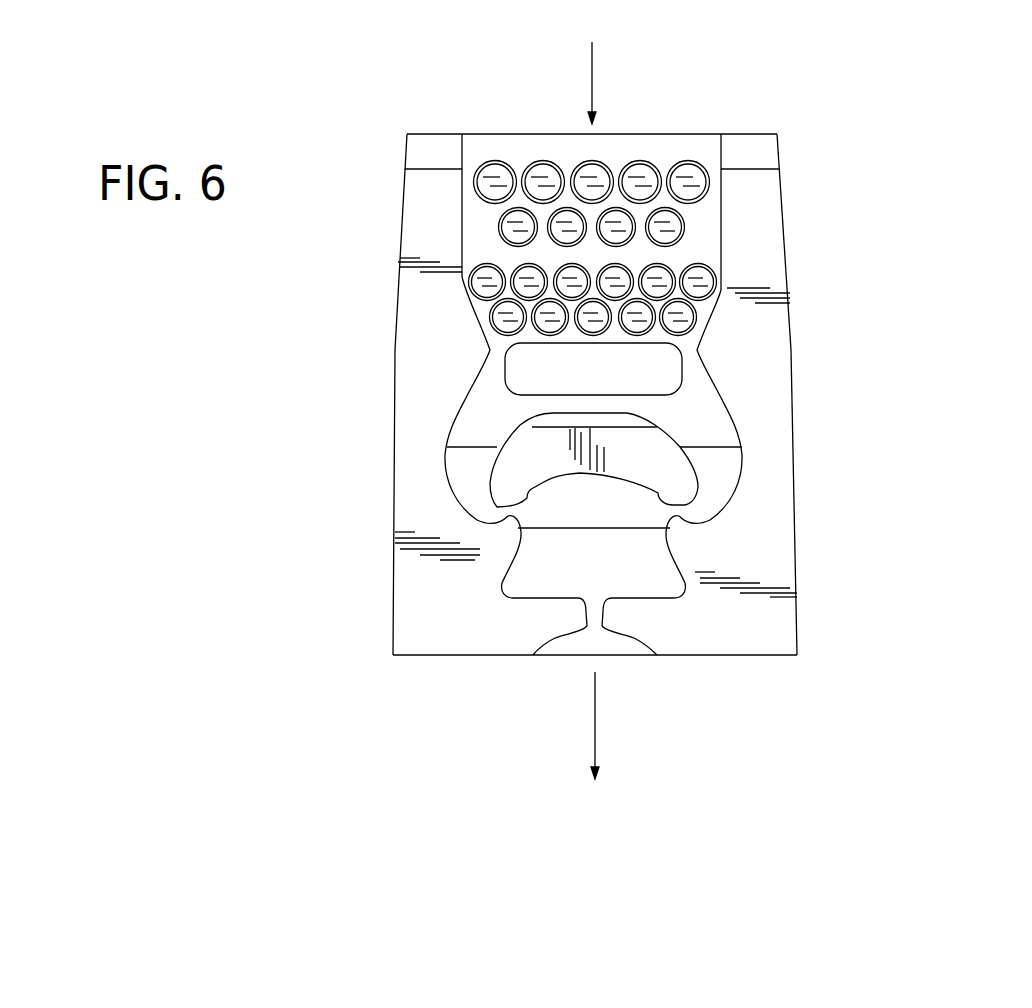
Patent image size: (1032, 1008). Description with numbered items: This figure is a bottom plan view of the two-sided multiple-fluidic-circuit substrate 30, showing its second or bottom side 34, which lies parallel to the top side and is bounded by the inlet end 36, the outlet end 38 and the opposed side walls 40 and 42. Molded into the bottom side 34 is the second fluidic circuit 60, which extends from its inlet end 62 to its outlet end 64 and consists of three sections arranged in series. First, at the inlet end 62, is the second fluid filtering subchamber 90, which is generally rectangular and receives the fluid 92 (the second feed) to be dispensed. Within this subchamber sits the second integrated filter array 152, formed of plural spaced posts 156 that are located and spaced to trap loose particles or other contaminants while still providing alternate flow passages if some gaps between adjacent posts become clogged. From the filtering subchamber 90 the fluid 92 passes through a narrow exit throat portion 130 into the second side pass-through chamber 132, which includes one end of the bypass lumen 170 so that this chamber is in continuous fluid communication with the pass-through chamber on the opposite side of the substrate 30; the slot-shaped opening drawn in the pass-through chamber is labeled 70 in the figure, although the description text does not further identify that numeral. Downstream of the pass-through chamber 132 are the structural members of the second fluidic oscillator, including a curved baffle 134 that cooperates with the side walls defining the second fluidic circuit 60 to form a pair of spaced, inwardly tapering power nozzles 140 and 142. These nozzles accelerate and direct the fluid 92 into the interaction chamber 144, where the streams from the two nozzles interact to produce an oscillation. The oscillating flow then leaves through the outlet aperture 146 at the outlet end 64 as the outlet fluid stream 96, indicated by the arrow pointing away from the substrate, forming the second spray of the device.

The substrate 30 is at (577, 396).
The second or bottom side 34 is at (778, 282).
The inlet end 36 is at (699, 134).
The outlet end 38 is at (778, 655).
The side wall 40 is at (795, 400).
The side wall 42 is at (393, 393).
The second fluidic circuit 60 is at (442, 428).
The inlet end 62 is at (652, 153).
The outlet end 64 is at (639, 666).
The slot 70 is at (520, 363).
The second fluid filtering subchamber 90 is at (475, 257).
The fluid (Feed 2) 92 is at (590, 79).
The outlet fluid stream 96 is at (596, 737).
The narrow exit throat portion 130 is at (690, 352).
The second side pass-through chamber 132 is at (700, 435).
The curved baffle 134 is at (670, 478).
The power nozzle 140 is at (500, 512).
The power nozzle 142 is at (677, 510).
The interaction chamber 144 is at (527, 558).
The outlet aperture 146 is at (585, 620).
The second integrated filter array 152 is at (502, 187).
The posts 156 is at (540, 232).
The bypass lumen 170 is at (665, 244).